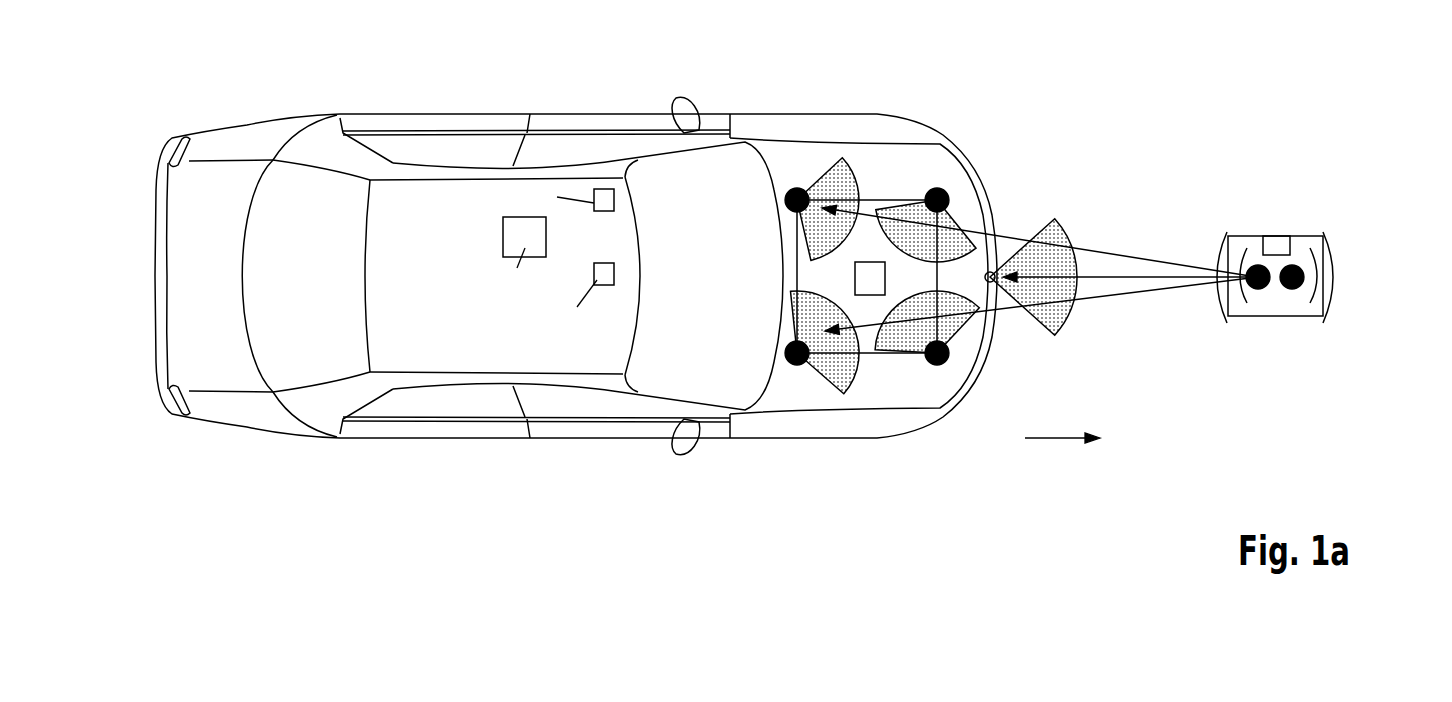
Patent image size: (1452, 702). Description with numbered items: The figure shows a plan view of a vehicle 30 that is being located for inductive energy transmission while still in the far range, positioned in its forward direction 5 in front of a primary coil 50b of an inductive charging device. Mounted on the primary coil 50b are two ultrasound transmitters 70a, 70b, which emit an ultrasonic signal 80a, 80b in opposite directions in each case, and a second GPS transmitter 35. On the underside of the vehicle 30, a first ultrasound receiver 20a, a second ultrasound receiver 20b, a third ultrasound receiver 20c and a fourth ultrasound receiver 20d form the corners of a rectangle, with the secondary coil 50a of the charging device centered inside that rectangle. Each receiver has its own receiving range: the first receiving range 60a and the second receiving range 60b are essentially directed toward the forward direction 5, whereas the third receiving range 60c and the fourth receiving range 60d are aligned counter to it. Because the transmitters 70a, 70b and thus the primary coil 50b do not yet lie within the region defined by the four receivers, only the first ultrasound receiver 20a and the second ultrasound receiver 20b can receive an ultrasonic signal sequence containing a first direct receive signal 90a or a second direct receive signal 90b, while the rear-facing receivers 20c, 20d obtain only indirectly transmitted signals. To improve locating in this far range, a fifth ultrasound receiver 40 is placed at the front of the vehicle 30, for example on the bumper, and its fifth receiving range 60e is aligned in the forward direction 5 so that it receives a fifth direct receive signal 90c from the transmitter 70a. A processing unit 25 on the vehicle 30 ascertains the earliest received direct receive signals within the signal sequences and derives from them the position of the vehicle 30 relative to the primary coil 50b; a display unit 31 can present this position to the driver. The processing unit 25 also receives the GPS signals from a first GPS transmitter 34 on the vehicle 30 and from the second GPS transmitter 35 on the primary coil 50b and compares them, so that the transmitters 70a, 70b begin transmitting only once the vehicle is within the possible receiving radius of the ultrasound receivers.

The forward direction 5 is at (1052, 442).
The first ultrasound receiver 20a is at (795, 190).
The second ultrasound receiver 20b is at (800, 366).
The third ultrasound receiver 20c is at (940, 190).
The fourth ultrasound receiver 20d is at (938, 366).
The processing unit 25 is at (517, 234).
The vehicle 30 is at (413, 325).
The display unit 31 is at (607, 285).
The first GPS transmitter 34 is at (607, 196).
The second GPS transmitter 35 is at (1277, 236).
The fifth ultrasound receiver 40 is at (993, 270).
The secondary coil 50a is at (867, 263).
The primary coil 50b is at (1302, 236).
The first receiving range 60a is at (832, 170).
The second receiving range 60b is at (835, 375).
The third receiving range 60c is at (900, 210).
The fourth receiving range 60d is at (950, 327).
The fifth receiving range 60e is at (1077, 227).
The first ultrasound transmitter 70a is at (1258, 290).
The second ultrasound transmitter 70b is at (1292, 290).
The ultrasonic signal 80a is at (1217, 314).
The ultrasonic signal 80b is at (1333, 277).
The first direct receive signal 90a is at (1125, 254).
The second direct receive signal 90b is at (1120, 298).
The fifth direct receive signal 90c is at (1157, 280).